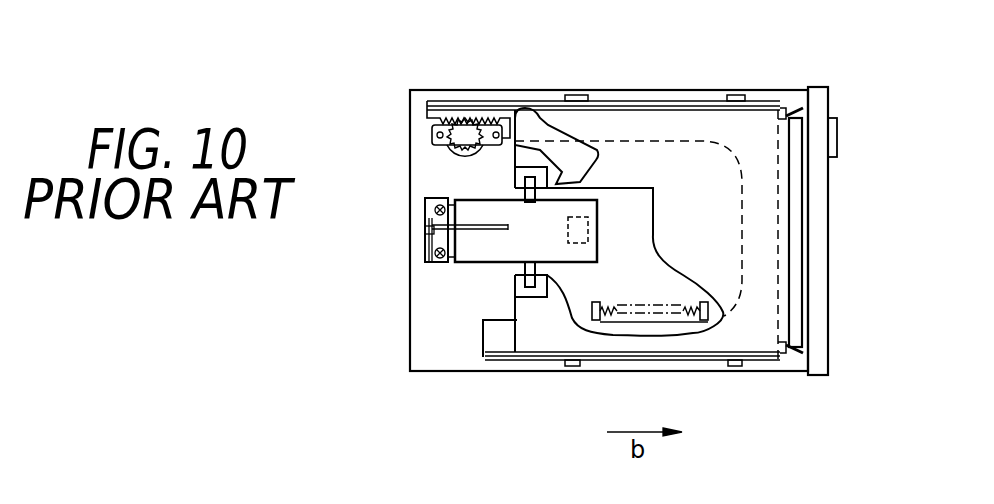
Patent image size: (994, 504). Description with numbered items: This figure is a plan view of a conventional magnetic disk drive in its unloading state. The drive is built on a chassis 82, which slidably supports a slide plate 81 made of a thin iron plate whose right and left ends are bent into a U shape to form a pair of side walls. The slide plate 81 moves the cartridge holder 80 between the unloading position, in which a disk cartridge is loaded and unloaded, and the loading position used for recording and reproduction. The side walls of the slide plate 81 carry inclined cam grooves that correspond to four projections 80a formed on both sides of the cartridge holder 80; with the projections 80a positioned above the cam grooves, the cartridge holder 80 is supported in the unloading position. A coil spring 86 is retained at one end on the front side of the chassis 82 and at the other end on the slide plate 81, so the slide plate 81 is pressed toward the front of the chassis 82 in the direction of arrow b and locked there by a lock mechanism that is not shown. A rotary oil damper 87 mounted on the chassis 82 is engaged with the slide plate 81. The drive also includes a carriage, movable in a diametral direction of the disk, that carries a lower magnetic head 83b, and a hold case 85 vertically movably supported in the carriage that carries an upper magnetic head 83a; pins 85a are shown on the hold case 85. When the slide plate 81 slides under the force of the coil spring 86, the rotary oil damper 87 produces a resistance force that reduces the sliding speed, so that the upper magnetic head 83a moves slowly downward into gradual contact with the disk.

The cartridge holder 80 is at (760, 325).
The projections 80a is at (578, 95).
The slide plate 81 is at (462, 104).
The chassis 82 is at (430, 353).
The upper magnetic head 83a is at (580, 245).
The lower magnetic head 83b is at (578, 230).
The hold case 85 is at (473, 258).
The pins 85a is at (515, 168).
The coil spring 86 is at (664, 322).
The rotary oil damper 87 is at (470, 150).